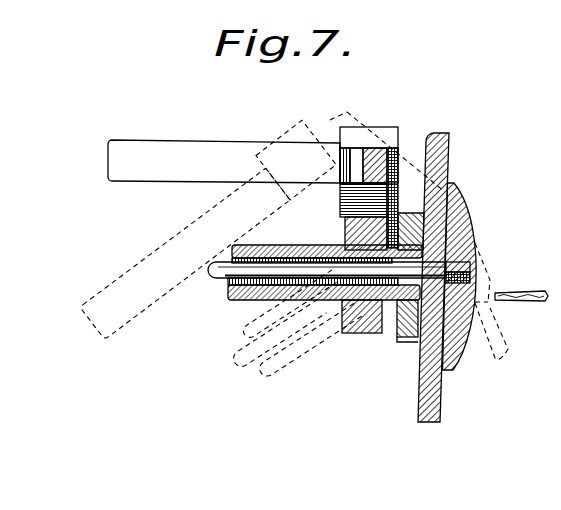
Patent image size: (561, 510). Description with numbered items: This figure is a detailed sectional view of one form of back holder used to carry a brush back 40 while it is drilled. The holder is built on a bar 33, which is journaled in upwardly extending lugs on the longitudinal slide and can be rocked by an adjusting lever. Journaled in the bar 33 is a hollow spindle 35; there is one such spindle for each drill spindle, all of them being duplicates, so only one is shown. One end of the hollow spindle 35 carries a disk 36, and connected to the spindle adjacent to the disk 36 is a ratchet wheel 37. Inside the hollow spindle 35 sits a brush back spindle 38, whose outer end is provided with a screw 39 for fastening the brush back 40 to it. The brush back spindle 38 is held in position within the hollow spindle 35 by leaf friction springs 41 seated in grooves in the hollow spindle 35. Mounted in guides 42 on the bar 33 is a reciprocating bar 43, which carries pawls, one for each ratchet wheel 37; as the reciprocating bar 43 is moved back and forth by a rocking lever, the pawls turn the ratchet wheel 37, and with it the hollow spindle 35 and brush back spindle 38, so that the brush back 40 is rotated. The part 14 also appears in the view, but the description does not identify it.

The rod 14 is at (524, 301).
The bar 33 is at (362, 333).
The hollow spindle 35 is at (250, 298).
The disk 36 is at (436, 393).
The ratchet wheel 37 is at (412, 343).
The brush back spindle 38 is at (215, 268).
The screw 39 is at (470, 277).
The brush back 40 is at (474, 222).
The leaf friction spring 41 is at (287, 250).
The guide 42 is at (381, 126).
The reciprocating bar 43 is at (392, 149).